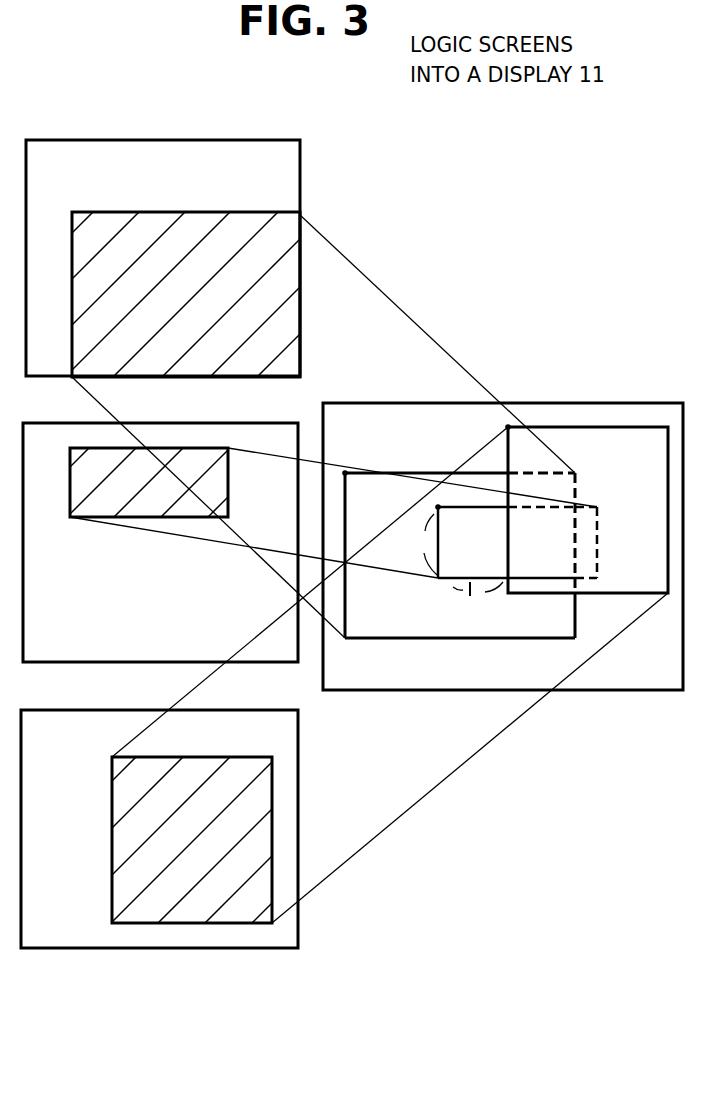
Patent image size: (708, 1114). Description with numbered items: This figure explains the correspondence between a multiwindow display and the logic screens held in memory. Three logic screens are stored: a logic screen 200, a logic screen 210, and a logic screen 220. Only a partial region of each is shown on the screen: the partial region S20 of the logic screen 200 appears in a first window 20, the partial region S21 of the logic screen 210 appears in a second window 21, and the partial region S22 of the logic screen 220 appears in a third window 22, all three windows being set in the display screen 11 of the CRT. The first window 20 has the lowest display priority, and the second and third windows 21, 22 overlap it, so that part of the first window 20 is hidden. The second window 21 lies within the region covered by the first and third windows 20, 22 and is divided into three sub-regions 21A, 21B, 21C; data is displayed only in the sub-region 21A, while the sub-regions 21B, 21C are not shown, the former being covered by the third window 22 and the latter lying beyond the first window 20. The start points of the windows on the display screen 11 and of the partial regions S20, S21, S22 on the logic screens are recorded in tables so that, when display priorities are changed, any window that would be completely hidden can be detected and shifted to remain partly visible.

The logic screen 200 is at (181, 140).
The logic screen 210 is at (206, 423).
The logic screen 220 is at (93, 710).
The partial region of logic screen 200 S20 is at (300, 320).
The partial region of logic screen 210 S21 is at (228, 490).
The partial region of logic screen 220 S22 is at (229, 768).
The display screen 11 is at (553, 403).
The first window 20 is at (532, 638).
The second window 21 is at (532, 566).
The sub-region of second window 21A is at (491, 564).
The sub-region of second window 21B is at (562, 564).
The sub-region of second window 21C is at (588, 555).
The third window 22 is at (641, 427).